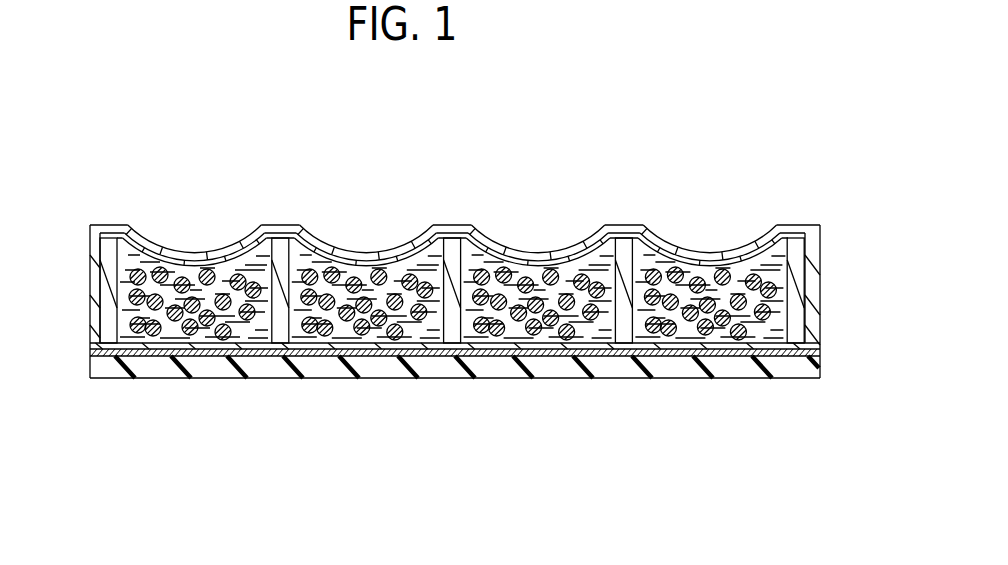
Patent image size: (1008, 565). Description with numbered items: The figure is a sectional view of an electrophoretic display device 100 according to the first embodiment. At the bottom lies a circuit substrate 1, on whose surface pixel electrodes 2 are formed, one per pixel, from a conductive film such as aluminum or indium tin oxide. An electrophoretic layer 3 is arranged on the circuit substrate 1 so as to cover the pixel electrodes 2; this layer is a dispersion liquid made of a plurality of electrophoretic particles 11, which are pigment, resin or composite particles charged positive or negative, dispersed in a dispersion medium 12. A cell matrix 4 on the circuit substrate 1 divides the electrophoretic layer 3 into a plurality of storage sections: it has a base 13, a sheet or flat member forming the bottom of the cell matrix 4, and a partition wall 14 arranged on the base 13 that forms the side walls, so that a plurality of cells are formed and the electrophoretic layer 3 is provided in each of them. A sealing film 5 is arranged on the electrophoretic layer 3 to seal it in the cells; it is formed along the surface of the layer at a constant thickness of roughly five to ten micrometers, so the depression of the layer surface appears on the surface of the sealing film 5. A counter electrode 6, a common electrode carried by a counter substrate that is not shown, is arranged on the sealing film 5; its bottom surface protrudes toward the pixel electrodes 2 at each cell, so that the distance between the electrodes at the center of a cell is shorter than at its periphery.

The electrophoretic display device 100 is at (126, 188).
The circuit substrate 1 is at (457, 362).
The pixel electrodes 2 is at (507, 352).
The electrophoretic layer 3 is at (452, 378).
The cell matrix 4 is at (452, 283).
The sealing film 5 is at (733, 256).
The counter electrode 6 is at (680, 258).
The electrophoretic particles 11 is at (563, 340).
The dispersion medium 12 is at (602, 323).
The base 13 is at (546, 342).
The partition wall 14 is at (455, 242).